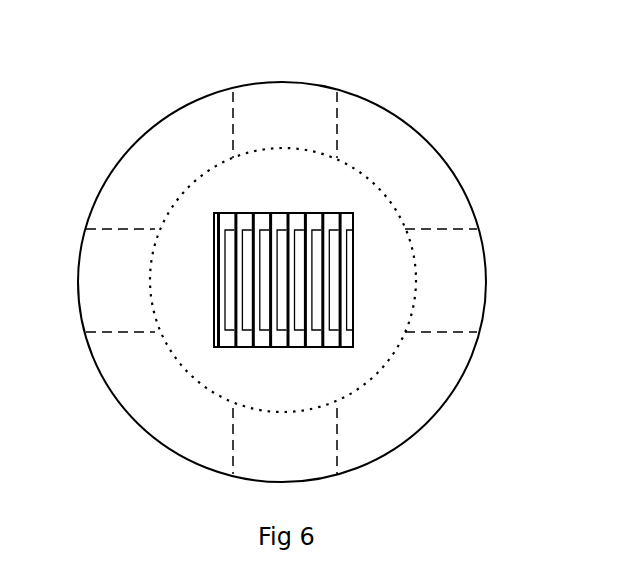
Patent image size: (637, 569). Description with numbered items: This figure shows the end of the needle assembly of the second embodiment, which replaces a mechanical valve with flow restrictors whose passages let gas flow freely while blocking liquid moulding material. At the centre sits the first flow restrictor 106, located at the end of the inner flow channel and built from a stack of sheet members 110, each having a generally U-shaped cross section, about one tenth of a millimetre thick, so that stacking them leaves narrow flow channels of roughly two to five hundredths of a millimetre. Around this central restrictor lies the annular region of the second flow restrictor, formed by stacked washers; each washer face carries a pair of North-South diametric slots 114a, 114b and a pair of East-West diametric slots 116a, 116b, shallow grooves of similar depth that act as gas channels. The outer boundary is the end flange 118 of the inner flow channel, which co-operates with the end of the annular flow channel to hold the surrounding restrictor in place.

The first flow restrictor 106 is at (381, 234).
The sheet members 110 is at (257, 213).
The North-South diametric slot 114a is at (312, 129).
The North-South diametric slot 114b is at (312, 462).
The East-West diametric slot 116a is at (137, 293).
The East-West diametric slot 116b is at (476, 294).
The end flange 118 is at (385, 142).